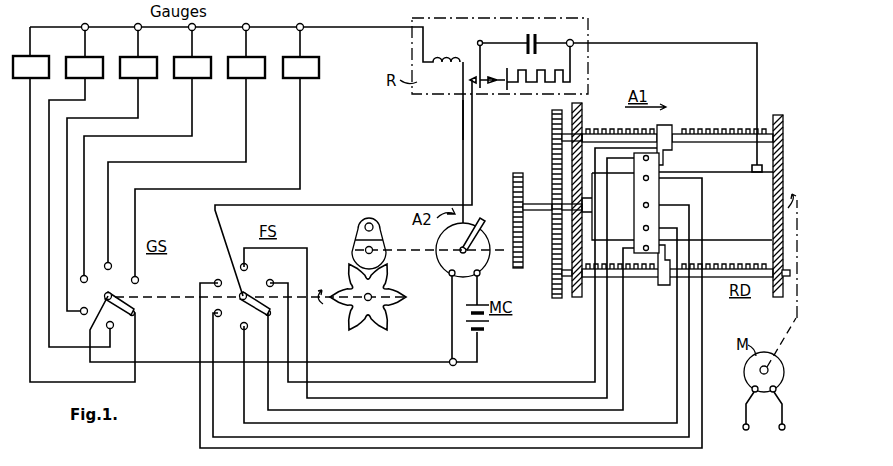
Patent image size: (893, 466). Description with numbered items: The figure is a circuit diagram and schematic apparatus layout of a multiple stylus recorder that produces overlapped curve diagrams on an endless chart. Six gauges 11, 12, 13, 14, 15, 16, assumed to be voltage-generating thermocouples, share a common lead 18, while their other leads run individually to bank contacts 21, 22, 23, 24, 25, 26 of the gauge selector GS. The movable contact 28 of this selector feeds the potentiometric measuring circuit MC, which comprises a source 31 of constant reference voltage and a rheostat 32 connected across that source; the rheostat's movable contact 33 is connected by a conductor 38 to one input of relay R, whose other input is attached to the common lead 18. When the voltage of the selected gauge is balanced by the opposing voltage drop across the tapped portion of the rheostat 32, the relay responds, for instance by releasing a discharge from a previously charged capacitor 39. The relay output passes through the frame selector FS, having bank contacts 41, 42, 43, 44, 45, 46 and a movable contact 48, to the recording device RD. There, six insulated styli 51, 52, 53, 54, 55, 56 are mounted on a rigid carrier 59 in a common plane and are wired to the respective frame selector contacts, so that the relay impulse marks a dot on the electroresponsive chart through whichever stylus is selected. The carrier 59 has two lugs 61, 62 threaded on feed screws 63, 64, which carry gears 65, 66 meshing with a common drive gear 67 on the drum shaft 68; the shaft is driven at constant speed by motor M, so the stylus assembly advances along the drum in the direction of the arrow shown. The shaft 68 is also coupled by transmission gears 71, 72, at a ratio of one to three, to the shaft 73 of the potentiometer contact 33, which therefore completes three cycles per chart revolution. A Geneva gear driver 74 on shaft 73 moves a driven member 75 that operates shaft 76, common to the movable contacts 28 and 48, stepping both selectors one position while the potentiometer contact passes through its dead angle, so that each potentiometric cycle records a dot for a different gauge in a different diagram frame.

The gauge 11 is at (31, 58).
The gauge 12 is at (86, 58).
The gauge 13 is at (140, 58).
The gauge 14 is at (194, 58).
The gauge 15 is at (248, 58).
The gauge 16 is at (304, 58).
The common lead 18 is at (397, 33).
The bank contact 21 is at (138, 315).
The bank contact 22 is at (112, 328).
The bank contact 23 is at (83, 315).
The bank contact 24 is at (86, 275).
The bank contact 25 is at (110, 263).
The bank contact 26 is at (139, 280).
The movable contact 28 is at (122, 294).
The source of constant reference voltage 31 is at (486, 330).
The rheostat 32 is at (481, 275).
The movable contact 33 is at (483, 228).
The relay conductor 38 is at (462, 124).
The capacitor 39 is at (541, 35).
The bank contact 41 is at (267, 318).
The bank contact 42 is at (242, 330).
The bank contact 43 is at (214, 314).
The bank contact 44 is at (216, 280).
The bank contact 45 is at (243, 263).
The bank contact 46 is at (272, 280).
The movable contact 48 is at (262, 283).
The stylus 51 is at (648, 253).
The stylus 52 is at (650, 230).
The stylus 53 is at (650, 207).
The stylus 54 is at (650, 180).
The stylus 55 is at (652, 158).
The stylus 56 is at (647, 133).
The stylus carrier 59 is at (628, 218).
The lug 61 is at (664, 287).
The lug 62 is at (677, 131).
The feed screw 63 is at (722, 268).
The feed screw 64 is at (712, 134).
The gear 65 is at (564, 296).
The gear 66 is at (552, 128).
The common drive gear 67 is at (552, 165).
The shaft 68 is at (540, 211).
The transmission gear 71 is at (516, 175).
The transmission gear 72 is at (516, 270).
The shaft 73 is at (403, 253).
The driver 74 is at (374, 226).
The driven member 75 is at (400, 305).
The shaft 76 is at (321, 309).